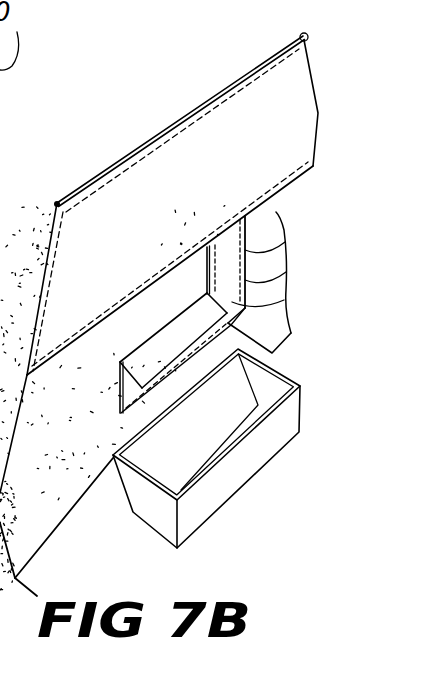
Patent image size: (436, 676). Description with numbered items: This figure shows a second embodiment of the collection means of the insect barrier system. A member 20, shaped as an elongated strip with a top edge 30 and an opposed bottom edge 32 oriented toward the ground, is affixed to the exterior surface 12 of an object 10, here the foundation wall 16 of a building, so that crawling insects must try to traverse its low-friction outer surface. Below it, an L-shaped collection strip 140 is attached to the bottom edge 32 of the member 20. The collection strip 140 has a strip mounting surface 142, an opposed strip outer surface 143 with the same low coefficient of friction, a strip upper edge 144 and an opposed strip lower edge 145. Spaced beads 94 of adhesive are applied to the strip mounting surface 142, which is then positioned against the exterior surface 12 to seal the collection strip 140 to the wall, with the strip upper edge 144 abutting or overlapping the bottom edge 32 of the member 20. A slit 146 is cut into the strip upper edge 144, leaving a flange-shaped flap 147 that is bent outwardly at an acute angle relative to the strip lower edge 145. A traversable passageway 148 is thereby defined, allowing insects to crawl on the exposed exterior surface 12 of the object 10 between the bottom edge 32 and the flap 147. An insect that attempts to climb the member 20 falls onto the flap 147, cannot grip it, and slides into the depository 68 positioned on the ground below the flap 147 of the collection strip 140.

The object 10 is at (85, 485).
The exterior surface 12 is at (45, 515).
The foundation wall 16 is at (87, 493).
The member 20 is at (72, 217).
The top edge 30 is at (155, 133).
The bottom edge 32 is at (42, 373).
The depository 68 is at (255, 447).
The beads of adhesive 94 is at (300, 30).
The collection strip 140 is at (283, 256).
The strip mounting surface 142 is at (283, 232).
The strip outer surface 143 is at (281, 294).
The strip upper edge 144 is at (225, 236).
The strip lower edge 145 is at (121, 420).
The slit 146 is at (191, 266).
The flap 147 is at (293, 335).
The traversable passageway 148 is at (141, 323).